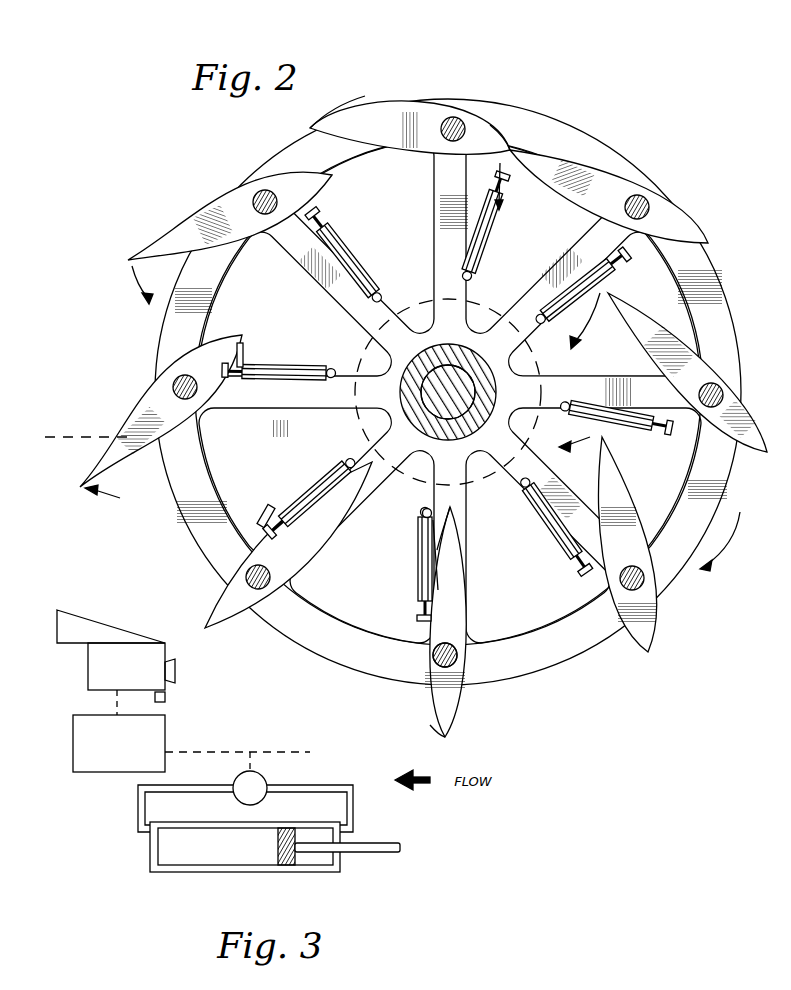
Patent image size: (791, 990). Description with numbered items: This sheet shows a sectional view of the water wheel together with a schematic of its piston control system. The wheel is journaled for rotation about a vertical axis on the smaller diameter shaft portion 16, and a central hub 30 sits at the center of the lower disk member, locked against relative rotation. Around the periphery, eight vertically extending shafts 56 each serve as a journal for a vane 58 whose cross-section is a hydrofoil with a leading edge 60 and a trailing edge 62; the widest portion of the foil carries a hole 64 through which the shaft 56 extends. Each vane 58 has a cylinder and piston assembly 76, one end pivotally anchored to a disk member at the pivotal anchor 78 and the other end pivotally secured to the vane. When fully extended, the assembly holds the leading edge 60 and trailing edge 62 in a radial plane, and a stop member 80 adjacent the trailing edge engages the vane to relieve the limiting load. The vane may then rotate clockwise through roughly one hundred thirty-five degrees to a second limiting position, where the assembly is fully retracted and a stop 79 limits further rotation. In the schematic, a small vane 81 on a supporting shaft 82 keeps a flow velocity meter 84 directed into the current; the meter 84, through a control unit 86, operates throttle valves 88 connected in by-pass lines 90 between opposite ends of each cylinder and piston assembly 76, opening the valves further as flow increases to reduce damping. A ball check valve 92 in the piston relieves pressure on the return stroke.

In FIG. 2, the shaft portion 16 is at (497, 378).
In FIG. 2, the central hub 30 is at (462, 345).
In FIG. 2, the shaft 56 is at (463, 124).
In FIG. 2, the vane 58 is at (632, 183).
In FIG. 2, the leading edge 60 is at (548, 117).
In FIG. 2, the trailing edge 62 is at (310, 128).
In FIG. 2, the hole 64 is at (458, 655).
In FIG. 2, the cylinder and piston assembly 76 is at (266, 395).
In FIG. 3, the cylinder and piston assembly 76 is at (205, 872).
In FIG. 2, the pivotal anchor 78 is at (424, 510).
In FIG. 2, the stop 79 is at (248, 346).
In FIG. 2, the stop member 80 is at (463, 528).
In FIG. 3, the small vane 81 is at (117, 630).
In FIG. 3, the supporting shaft 82 is at (165, 698).
In FIG. 3, the flow velocity meter 84 is at (165, 653).
In FIG. 3, the control unit 86 is at (165, 728).
In FIG. 3, the throttle valve 88 is at (264, 780).
In FIG. 3, the by-pass line 90 is at (353, 785).
In FIG. 3, the ball check valve 92 is at (292, 862).